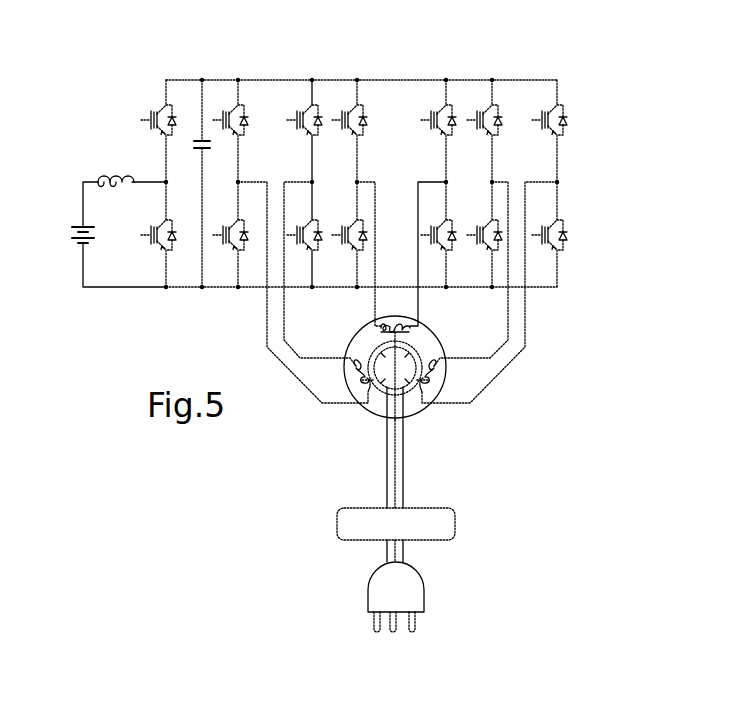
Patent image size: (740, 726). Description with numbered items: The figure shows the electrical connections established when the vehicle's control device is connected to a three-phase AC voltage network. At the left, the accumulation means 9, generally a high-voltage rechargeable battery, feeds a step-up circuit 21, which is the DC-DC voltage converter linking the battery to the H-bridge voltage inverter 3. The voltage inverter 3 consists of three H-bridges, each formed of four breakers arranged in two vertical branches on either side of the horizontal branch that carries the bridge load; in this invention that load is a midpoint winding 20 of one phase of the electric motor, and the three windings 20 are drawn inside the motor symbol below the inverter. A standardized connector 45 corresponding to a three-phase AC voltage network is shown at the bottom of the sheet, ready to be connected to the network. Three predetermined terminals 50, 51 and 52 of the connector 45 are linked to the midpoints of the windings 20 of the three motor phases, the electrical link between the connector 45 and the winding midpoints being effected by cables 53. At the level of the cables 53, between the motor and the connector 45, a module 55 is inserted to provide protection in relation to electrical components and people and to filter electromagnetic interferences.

The H-bridge voltage inverter 3 is at (565, 64).
The accumulation means 9 is at (78, 222).
The midpoint winding 20 is at (407, 318).
The step-up circuit 21 is at (205, 64).
The standardized connector 45 is at (372, 588).
The predetermined terminal 50 is at (372, 622).
The predetermined terminal 51 is at (394, 636).
The predetermined terminal 52 is at (420, 622).
The cables 53 is at (387, 443).
The protection and filtering module 55 is at (455, 517).